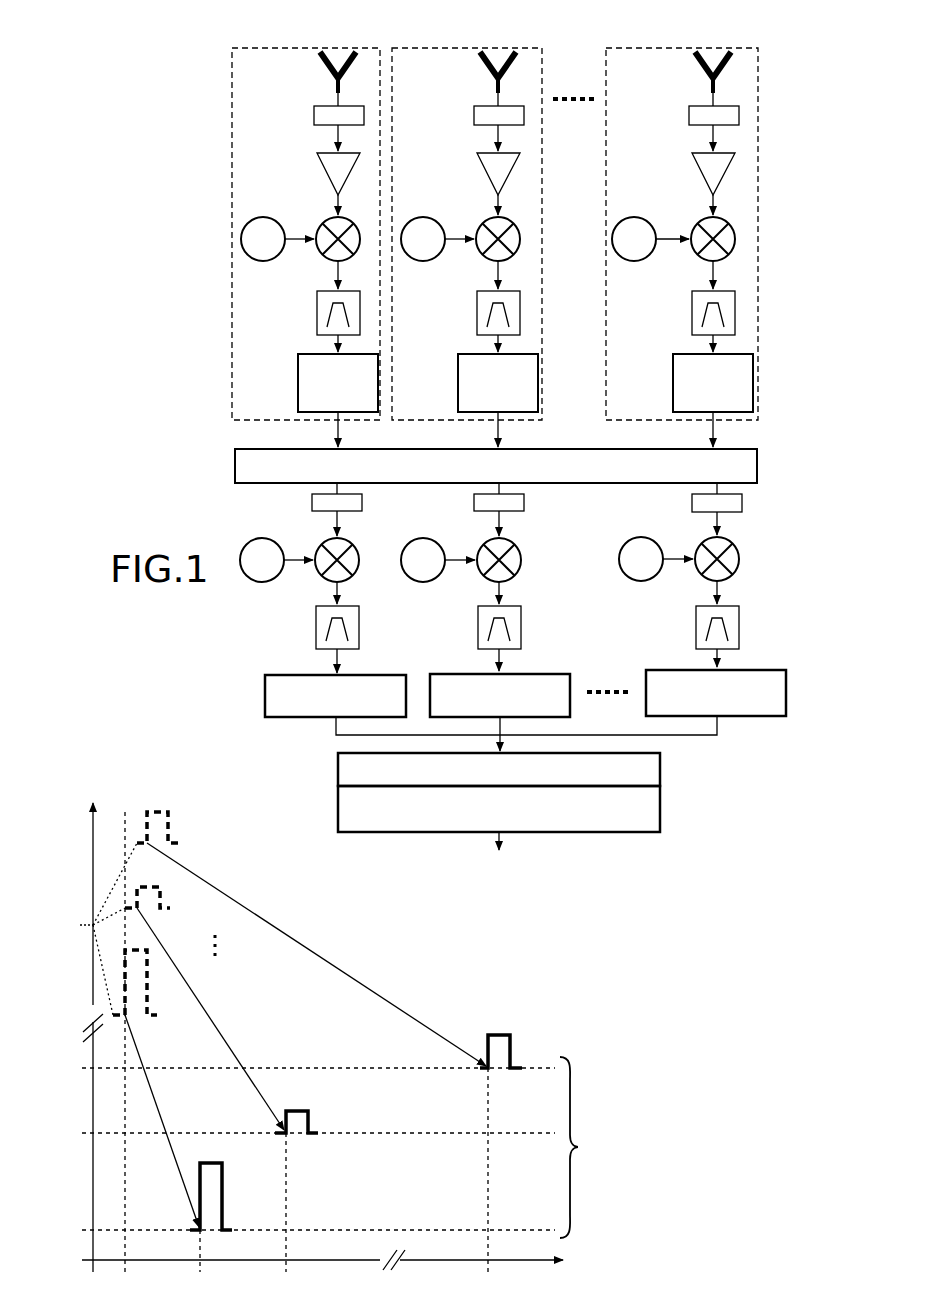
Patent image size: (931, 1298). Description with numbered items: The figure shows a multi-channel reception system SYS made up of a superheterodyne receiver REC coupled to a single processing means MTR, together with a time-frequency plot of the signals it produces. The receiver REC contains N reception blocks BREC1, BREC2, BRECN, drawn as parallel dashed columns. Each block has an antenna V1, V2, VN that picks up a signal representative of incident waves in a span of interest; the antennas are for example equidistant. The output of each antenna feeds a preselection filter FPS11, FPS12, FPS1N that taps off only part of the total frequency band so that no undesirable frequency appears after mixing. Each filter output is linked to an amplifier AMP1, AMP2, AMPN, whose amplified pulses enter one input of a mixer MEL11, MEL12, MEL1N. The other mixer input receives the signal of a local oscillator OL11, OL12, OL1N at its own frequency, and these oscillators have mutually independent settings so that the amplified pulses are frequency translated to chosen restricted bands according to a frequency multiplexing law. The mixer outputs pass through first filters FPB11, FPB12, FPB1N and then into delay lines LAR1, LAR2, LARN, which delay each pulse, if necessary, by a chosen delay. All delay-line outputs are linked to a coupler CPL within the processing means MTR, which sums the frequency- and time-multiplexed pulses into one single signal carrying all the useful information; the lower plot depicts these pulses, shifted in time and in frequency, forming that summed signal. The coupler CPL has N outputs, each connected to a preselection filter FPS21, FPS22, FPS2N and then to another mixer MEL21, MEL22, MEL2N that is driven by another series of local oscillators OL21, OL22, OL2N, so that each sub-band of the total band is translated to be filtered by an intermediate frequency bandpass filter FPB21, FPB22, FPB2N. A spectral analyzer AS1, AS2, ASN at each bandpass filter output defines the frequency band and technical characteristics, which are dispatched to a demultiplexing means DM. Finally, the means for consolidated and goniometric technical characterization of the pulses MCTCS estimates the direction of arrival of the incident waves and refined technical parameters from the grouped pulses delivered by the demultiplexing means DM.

The multi-channel reception system SYS is at (152, 62).
The receiver of superheterodyne type REC is at (220, 124).
The reception block BREC1 is at (232, 218).
The reception block BREC2 is at (450, 48).
The reception block BRECN is at (810, 170).
The antenna V1 is at (334, 78).
The antenna V2 is at (494, 78).
The antenna VN is at (710, 78).
The preselection filter FPS11 is at (314, 123).
The preselection filter FPS12 is at (474, 123).
The preselection filter FPS1N is at (689, 123).
The amplifier AMP1 is at (320, 170).
The amplifier AMP2 is at (480, 170).
The amplifier AMPN is at (695, 170).
The mixer MEL11 is at (322, 225).
The mixer MEL12 is at (482, 225).
The mixer MEL1N is at (697, 225).
The local oscillator OL11 is at (263, 239).
The local oscillator OL12 is at (423, 239).
The local oscillator OL1N is at (634, 239).
The first filter FPB11 is at (317, 306).
The first filter FPB12 is at (477, 306).
The first filter FPB1N is at (692, 306).
The delay line LAR1 is at (338, 383).
The delay line LAR2 is at (498, 383).
The delay line LARN is at (713, 383).
The coupler CPL is at (496, 466).
The processing means MTR is at (198, 632).
The preselection filter FPS21 is at (312, 506).
The preselection filter FPS22 is at (524, 502).
The preselection filter FPS2N is at (742, 502).
The mixer MEL21 is at (385, 543).
The mixer MEL22 is at (547, 545).
The mixer MEL2N is at (740, 556).
The local oscillator OL21 is at (262, 560).
The local oscillator OL22 is at (423, 560).
The local oscillator OL2N is at (641, 559).
The intermediate frequency bandpass filter FPB21 is at (316, 618).
The intermediate frequency bandpass filter FPB22 is at (478, 618).
The intermediate frequency bandpass filter FPB2N is at (696, 618).
The spectral analyzer AS1 is at (335, 696).
The spectral analyzer AS2 is at (500, 695).
The spectral analyzer ASN is at (716, 693).
The demultiplexing means DM is at (499, 769).
The means for consolidated and goniometric technical characterization of the pulses MCTCS is at (499, 809).